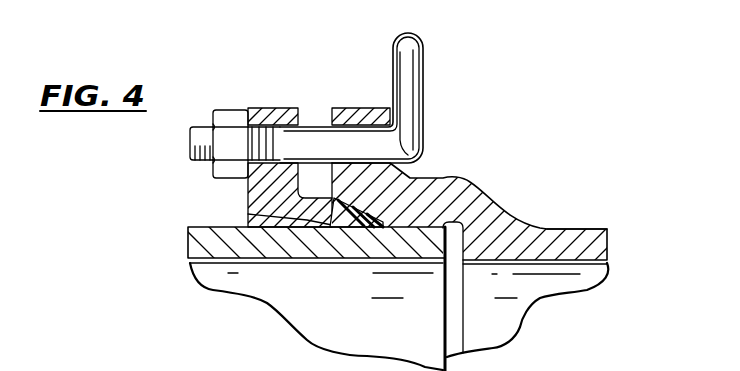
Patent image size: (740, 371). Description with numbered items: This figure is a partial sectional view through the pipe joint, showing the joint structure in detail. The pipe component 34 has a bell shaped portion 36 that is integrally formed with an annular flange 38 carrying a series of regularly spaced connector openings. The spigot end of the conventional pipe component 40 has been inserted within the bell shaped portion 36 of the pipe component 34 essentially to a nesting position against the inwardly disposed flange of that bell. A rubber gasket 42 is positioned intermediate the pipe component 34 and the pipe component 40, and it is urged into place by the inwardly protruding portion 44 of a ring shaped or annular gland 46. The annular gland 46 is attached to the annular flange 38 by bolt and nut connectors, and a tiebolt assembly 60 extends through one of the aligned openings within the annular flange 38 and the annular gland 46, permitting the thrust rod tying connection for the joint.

The pipe component 34 is at (588, 238).
The bell shaped portion 36 is at (497, 206).
The annular flange 38 is at (358, 108).
The pipe component 40 is at (207, 228).
The rubber gasket 42 is at (374, 96).
The inwardly protruding portion 44 is at (317, 212).
The annular gland 46 is at (274, 108).
The tiebolt assembly 60 is at (419, 45).